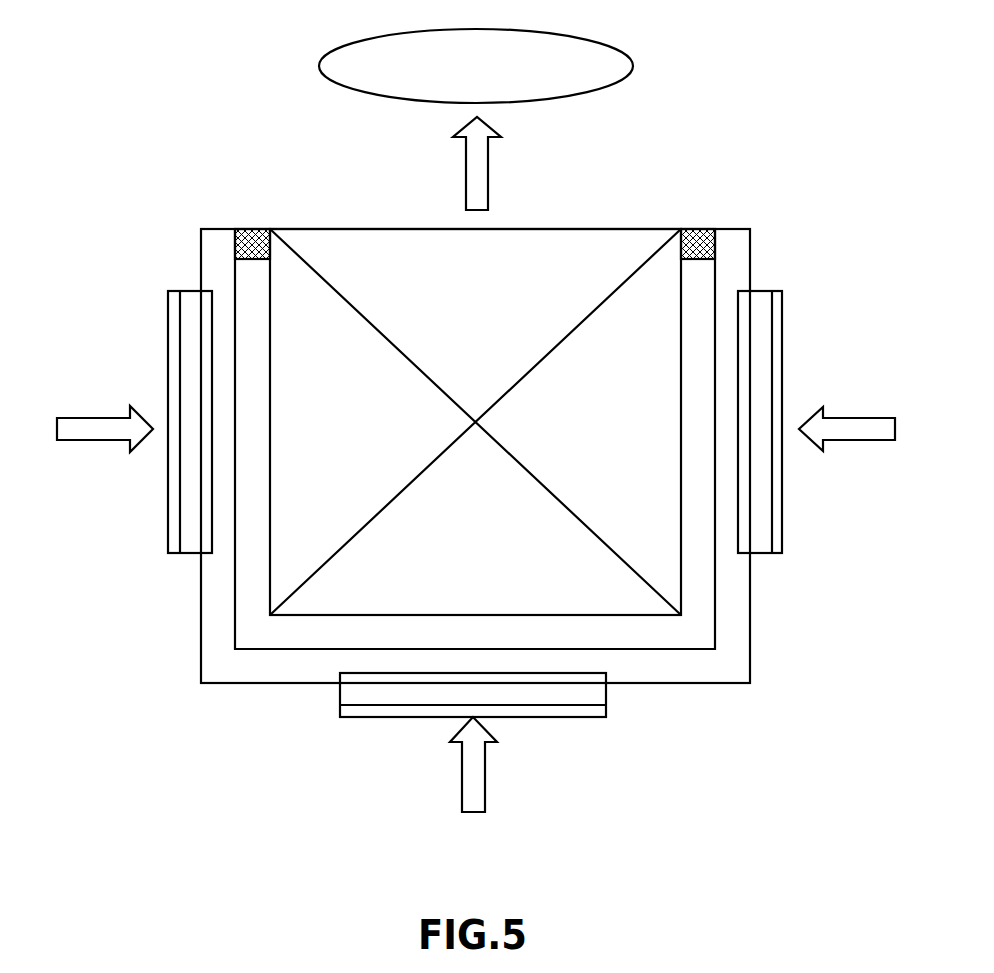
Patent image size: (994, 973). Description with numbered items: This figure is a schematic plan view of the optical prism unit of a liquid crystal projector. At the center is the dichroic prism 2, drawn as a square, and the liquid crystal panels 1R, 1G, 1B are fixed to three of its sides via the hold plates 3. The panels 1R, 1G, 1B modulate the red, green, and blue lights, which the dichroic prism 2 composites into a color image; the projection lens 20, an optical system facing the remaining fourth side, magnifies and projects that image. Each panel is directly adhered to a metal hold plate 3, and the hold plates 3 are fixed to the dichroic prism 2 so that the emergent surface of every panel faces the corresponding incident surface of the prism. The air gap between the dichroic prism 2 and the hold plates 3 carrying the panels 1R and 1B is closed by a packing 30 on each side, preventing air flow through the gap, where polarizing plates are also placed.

The projection lens 20 is at (634, 64).
The dichroic prism 2 is at (578, 229).
The hold plate 3 is at (202, 256).
The packing 30 is at (253, 229).
The liquid crystal panel 1B is at (168, 352).
The liquid crystal panel 1R is at (782, 356).
The liquid crystal panel 1G is at (565, 718).